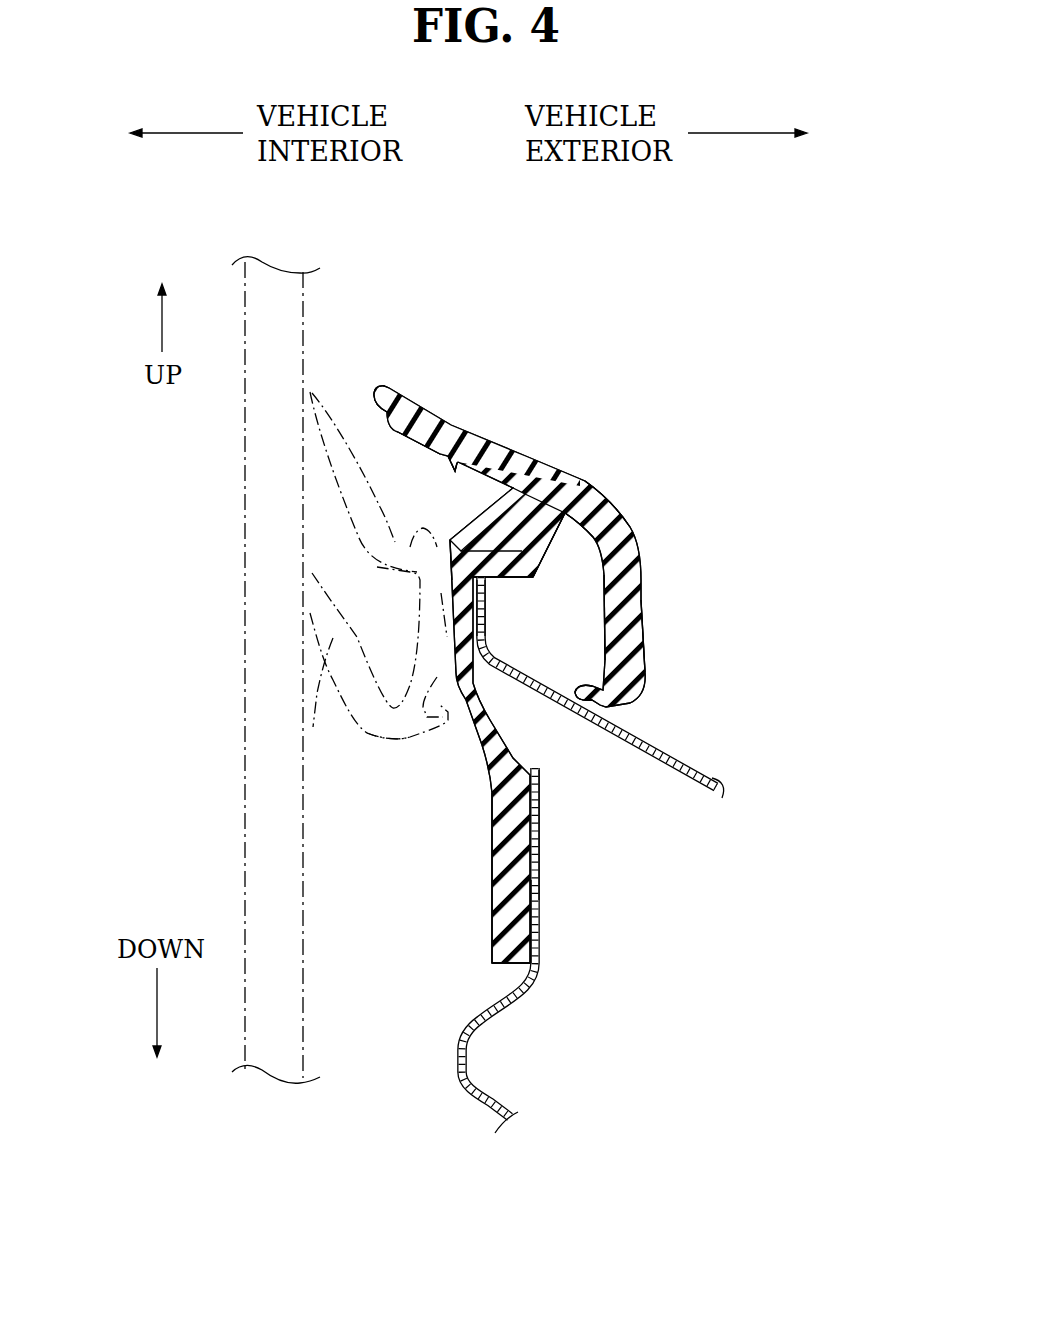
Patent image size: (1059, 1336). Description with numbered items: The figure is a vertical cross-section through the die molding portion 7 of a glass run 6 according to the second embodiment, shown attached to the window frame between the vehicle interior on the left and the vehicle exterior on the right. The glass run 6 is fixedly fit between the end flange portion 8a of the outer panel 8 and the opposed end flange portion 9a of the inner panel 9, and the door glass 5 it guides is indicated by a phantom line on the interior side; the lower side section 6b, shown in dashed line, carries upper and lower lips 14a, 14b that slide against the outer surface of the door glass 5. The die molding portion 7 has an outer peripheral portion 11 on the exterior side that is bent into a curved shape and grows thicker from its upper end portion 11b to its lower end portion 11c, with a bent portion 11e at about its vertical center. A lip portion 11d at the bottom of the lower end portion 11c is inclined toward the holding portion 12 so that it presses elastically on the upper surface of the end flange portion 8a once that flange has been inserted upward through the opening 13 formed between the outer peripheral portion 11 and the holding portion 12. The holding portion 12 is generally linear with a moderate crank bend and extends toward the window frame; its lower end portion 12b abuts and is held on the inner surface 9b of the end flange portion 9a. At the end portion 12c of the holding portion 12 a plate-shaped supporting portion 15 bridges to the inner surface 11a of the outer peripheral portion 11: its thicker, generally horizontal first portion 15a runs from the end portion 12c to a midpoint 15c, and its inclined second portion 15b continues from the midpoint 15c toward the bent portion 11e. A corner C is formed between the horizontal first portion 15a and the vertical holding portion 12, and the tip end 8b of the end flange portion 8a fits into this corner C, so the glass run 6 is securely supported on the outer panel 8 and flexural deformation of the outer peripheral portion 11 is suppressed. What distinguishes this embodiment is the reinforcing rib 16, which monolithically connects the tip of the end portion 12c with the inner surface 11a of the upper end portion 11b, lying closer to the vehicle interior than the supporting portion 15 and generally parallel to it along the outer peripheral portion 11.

The door glass 5 is at (243, 703).
The glass run 6 is at (509, 674).
The die molding portion 7 is at (653, 584).
The outer panel 8 is at (713, 757).
The end flange portion 8a is at (490, 632).
The tip end 8b is at (445, 587).
The inner panel 9 is at (497, 1060).
The end flange portion 9a is at (537, 810).
The inner surface 9b is at (522, 907).
The outer peripheral portion 11 is at (549, 462).
The inner surface 11a is at (455, 456).
The upper end portion 11b is at (392, 388).
The lower end portion 11c is at (626, 662).
The lip portion 11d is at (600, 714).
The bent portion 11e is at (603, 502).
The holding portion 12 is at (478, 906).
The lower end portion 12b is at (492, 935).
The end portion 12c is at (455, 552).
The opening 13 is at (543, 732).
The upper lip 14a is at (323, 413).
The lower lip 14b is at (374, 685).
The supporting portion 15 is at (566, 511).
The first portion 15a is at (519, 535).
The second portion 15b is at (557, 543).
The midpoint 15c is at (540, 563).
The reinforcing rib 16 is at (483, 518).
The lower side section 6b is at (395, 765).
The corner C is at (486, 600).